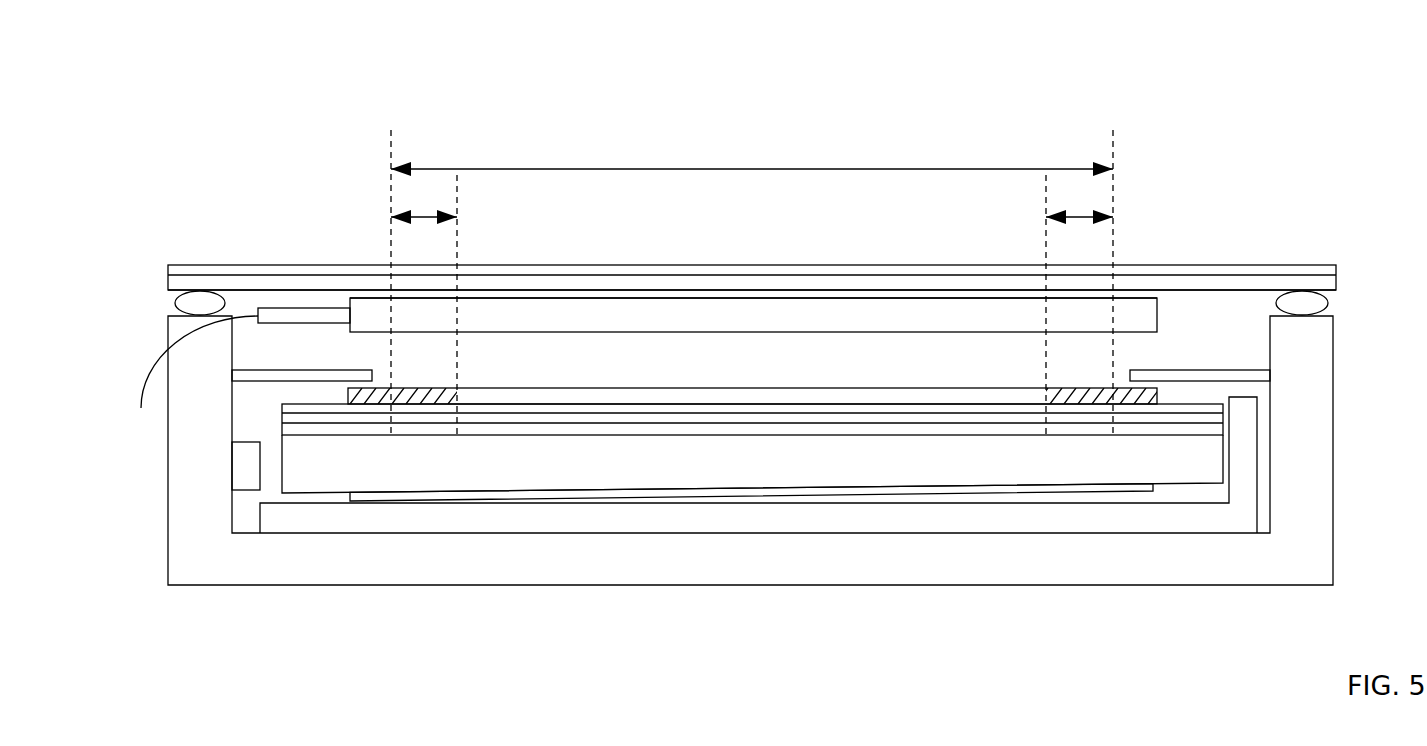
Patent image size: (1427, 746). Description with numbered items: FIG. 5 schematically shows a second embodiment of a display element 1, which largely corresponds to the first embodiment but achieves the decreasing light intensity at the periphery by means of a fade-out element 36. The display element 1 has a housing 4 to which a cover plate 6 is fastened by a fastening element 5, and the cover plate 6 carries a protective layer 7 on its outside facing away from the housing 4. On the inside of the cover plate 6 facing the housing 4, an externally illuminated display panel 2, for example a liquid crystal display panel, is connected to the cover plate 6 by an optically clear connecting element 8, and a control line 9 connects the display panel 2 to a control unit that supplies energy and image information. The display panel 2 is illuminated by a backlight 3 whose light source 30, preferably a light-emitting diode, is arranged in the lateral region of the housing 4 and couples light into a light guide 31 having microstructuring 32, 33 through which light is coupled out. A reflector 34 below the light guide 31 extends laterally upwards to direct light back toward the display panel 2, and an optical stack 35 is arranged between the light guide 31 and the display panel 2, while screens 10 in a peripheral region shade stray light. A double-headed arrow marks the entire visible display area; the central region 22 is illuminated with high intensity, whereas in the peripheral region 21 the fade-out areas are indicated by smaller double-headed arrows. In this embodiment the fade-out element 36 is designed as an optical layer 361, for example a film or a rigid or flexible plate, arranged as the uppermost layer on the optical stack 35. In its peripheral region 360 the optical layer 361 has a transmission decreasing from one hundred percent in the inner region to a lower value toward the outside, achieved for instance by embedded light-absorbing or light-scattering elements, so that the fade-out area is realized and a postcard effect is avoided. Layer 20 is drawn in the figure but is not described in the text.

The display element 1 is at (322, 117).
The display panel 2 is at (1145, 313).
The backlight 3 is at (262, 422).
The housing 4 is at (1325, 400).
The fastening element 5 is at (1323, 303).
The cover plate 6 is at (762, 195).
The protective layer 7 is at (1168, 269).
The optically clear connecting element 8 is at (357, 294).
The control line 9 is at (188, 334).
The screens 10 is at (1187, 375).
The cover plate lower layer 20 is at (689, 280).
The peripheral region 21 is at (423, 248).
The central region 22 is at (782, 245).
The light source 30 is at (245, 481).
The light guide 31 is at (321, 484).
The microstructuring 32 is at (752, 543).
The microstructuring 33 is at (850, 493).
The reflector 34 is at (490, 518).
The optical stack 35 is at (1213, 419).
The fade-out element 36 is at (746, 519).
The peripheral region 360 is at (1082, 377).
The optical layer 361 is at (398, 396).